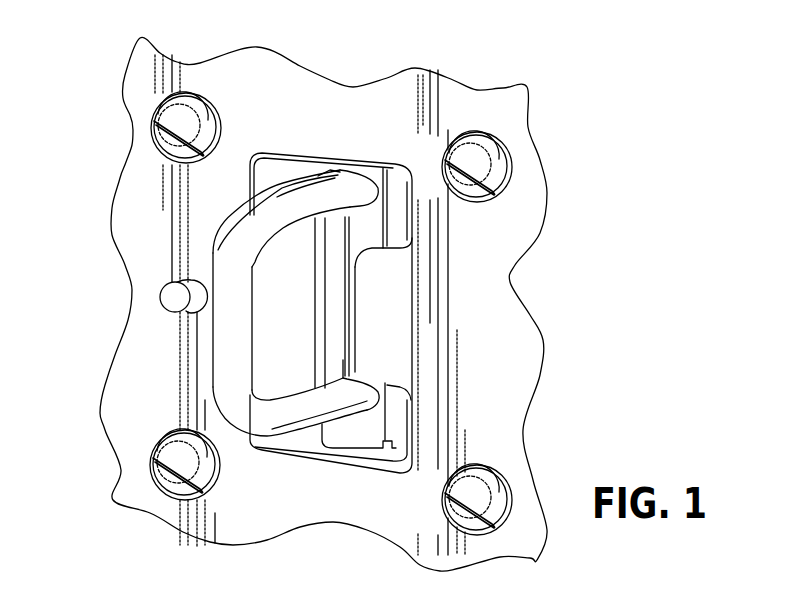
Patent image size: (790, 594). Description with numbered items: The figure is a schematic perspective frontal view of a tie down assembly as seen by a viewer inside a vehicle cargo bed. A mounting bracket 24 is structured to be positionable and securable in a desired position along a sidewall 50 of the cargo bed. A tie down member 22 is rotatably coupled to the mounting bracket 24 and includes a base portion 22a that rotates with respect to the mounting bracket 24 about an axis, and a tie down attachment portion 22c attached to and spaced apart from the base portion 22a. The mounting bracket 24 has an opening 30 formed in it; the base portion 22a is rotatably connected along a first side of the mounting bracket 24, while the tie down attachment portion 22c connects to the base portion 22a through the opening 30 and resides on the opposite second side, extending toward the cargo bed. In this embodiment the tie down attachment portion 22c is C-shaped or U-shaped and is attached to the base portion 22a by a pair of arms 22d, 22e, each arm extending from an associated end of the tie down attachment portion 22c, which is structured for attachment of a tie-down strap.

The tie down member 22 is at (318, 301).
The base portion 22a is at (382, 217).
The tie down attachment portion 22c is at (235, 346).
The arm 22d is at (290, 203).
The arm 22e is at (303, 408).
The mounting bracket 24 is at (380, 323).
The opening 30 is at (413, 233).
The sidewall 50 is at (147, 228).